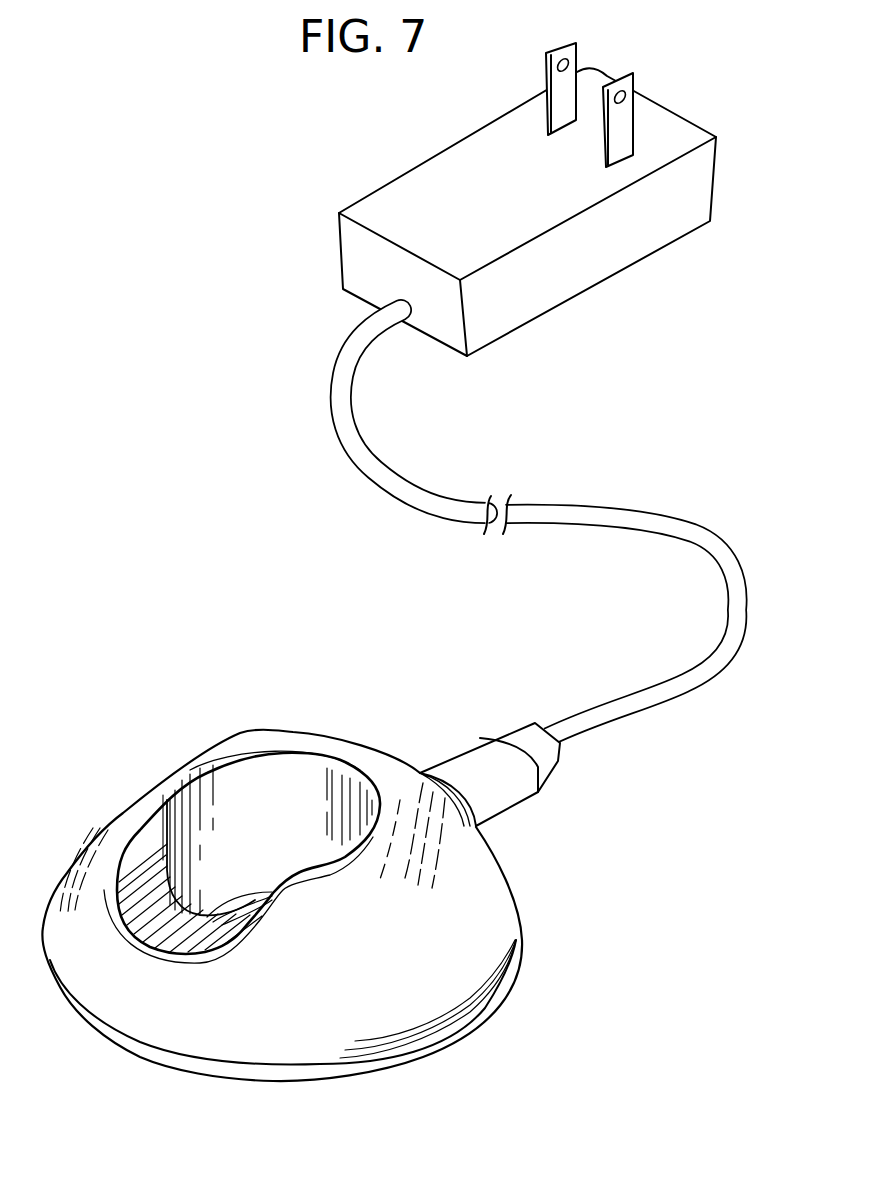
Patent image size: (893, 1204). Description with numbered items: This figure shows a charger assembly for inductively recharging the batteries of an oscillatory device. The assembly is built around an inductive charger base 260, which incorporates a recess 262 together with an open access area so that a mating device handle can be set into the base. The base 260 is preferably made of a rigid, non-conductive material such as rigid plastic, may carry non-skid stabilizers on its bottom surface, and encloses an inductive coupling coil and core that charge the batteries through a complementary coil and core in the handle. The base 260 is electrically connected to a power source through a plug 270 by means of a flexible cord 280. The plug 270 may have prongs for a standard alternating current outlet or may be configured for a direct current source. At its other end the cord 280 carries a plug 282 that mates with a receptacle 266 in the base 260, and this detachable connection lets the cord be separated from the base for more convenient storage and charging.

The inductive charger base 260 is at (247, 742).
The recess 262 is at (413, 965).
The receptacle 266 is at (453, 780).
The plug 270 is at (600, 260).
The flexible cord 280 is at (433, 508).
The plug 282 is at (520, 767).